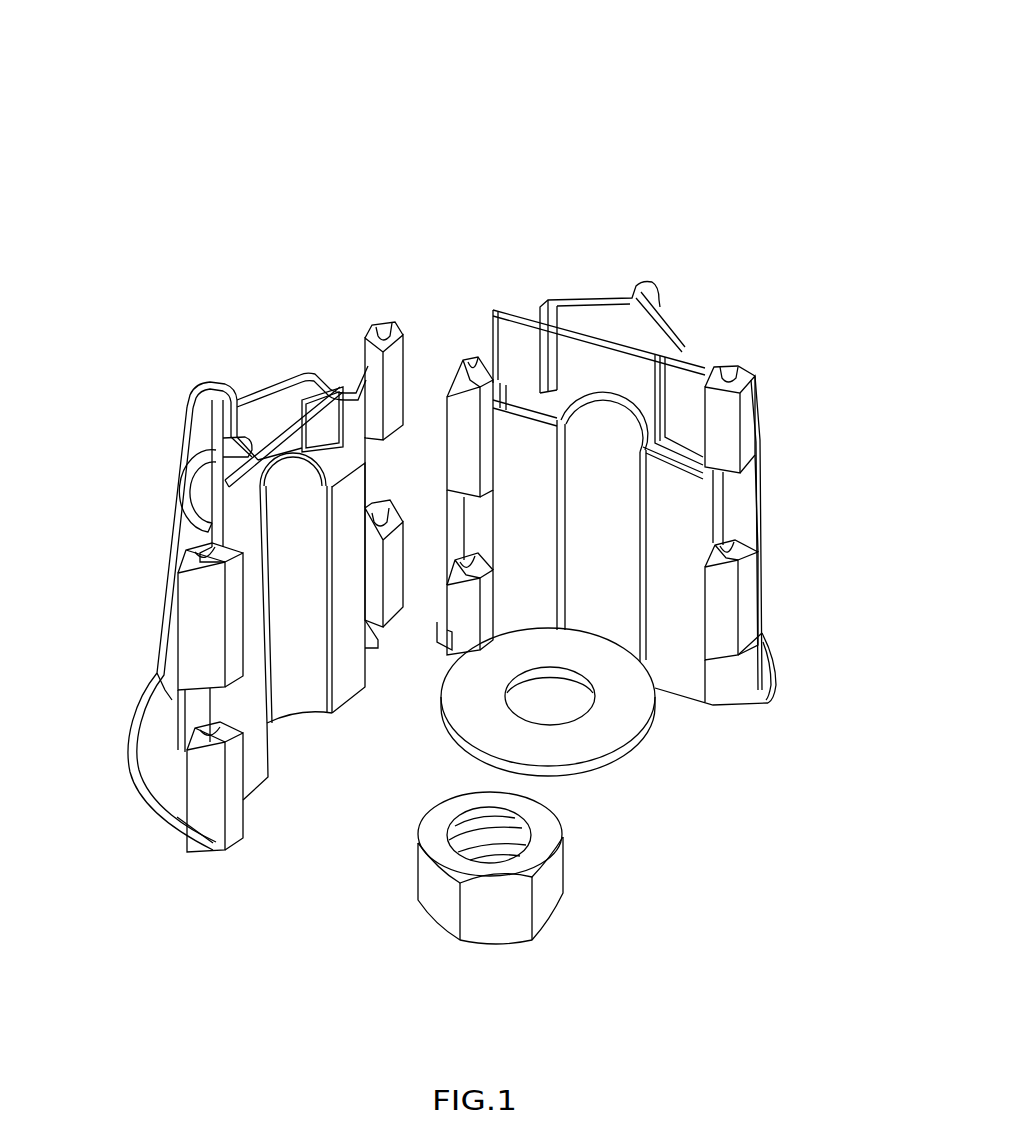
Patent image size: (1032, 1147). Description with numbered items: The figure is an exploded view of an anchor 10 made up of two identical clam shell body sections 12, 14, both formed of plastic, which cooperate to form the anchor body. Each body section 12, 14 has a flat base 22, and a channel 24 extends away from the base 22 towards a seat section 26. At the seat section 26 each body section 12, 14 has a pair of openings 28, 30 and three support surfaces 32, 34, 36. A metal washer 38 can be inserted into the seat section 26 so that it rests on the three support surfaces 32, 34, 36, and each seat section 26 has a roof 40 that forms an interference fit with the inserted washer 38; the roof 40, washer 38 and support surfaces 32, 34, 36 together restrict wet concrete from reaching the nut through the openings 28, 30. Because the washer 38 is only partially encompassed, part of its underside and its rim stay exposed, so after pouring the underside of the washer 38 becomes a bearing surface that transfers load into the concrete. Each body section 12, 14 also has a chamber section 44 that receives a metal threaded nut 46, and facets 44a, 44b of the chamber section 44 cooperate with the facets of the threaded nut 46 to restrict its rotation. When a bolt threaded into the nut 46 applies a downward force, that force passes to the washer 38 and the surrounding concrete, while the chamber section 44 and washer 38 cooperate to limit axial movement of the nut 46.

The anchor 10 is at (210, 125).
The clam shell body section 12 is at (170, 667).
The clam shell body section 14 is at (763, 600).
The flat base 22 is at (165, 813).
The channel 24 is at (293, 740).
The seat section 26 is at (298, 505).
The opening 28 is at (652, 402).
The opening 30 is at (605, 387).
The support surface 32 is at (520, 403).
The support surface 34 is at (680, 460).
The support surface 36 is at (650, 403).
The washer 38 is at (607, 727).
The roof 40 is at (207, 507).
The chamber section 44 is at (324, 436).
The facet 44a is at (557, 400).
The facet 44b is at (662, 352).
The threaded nut 46 is at (507, 900).